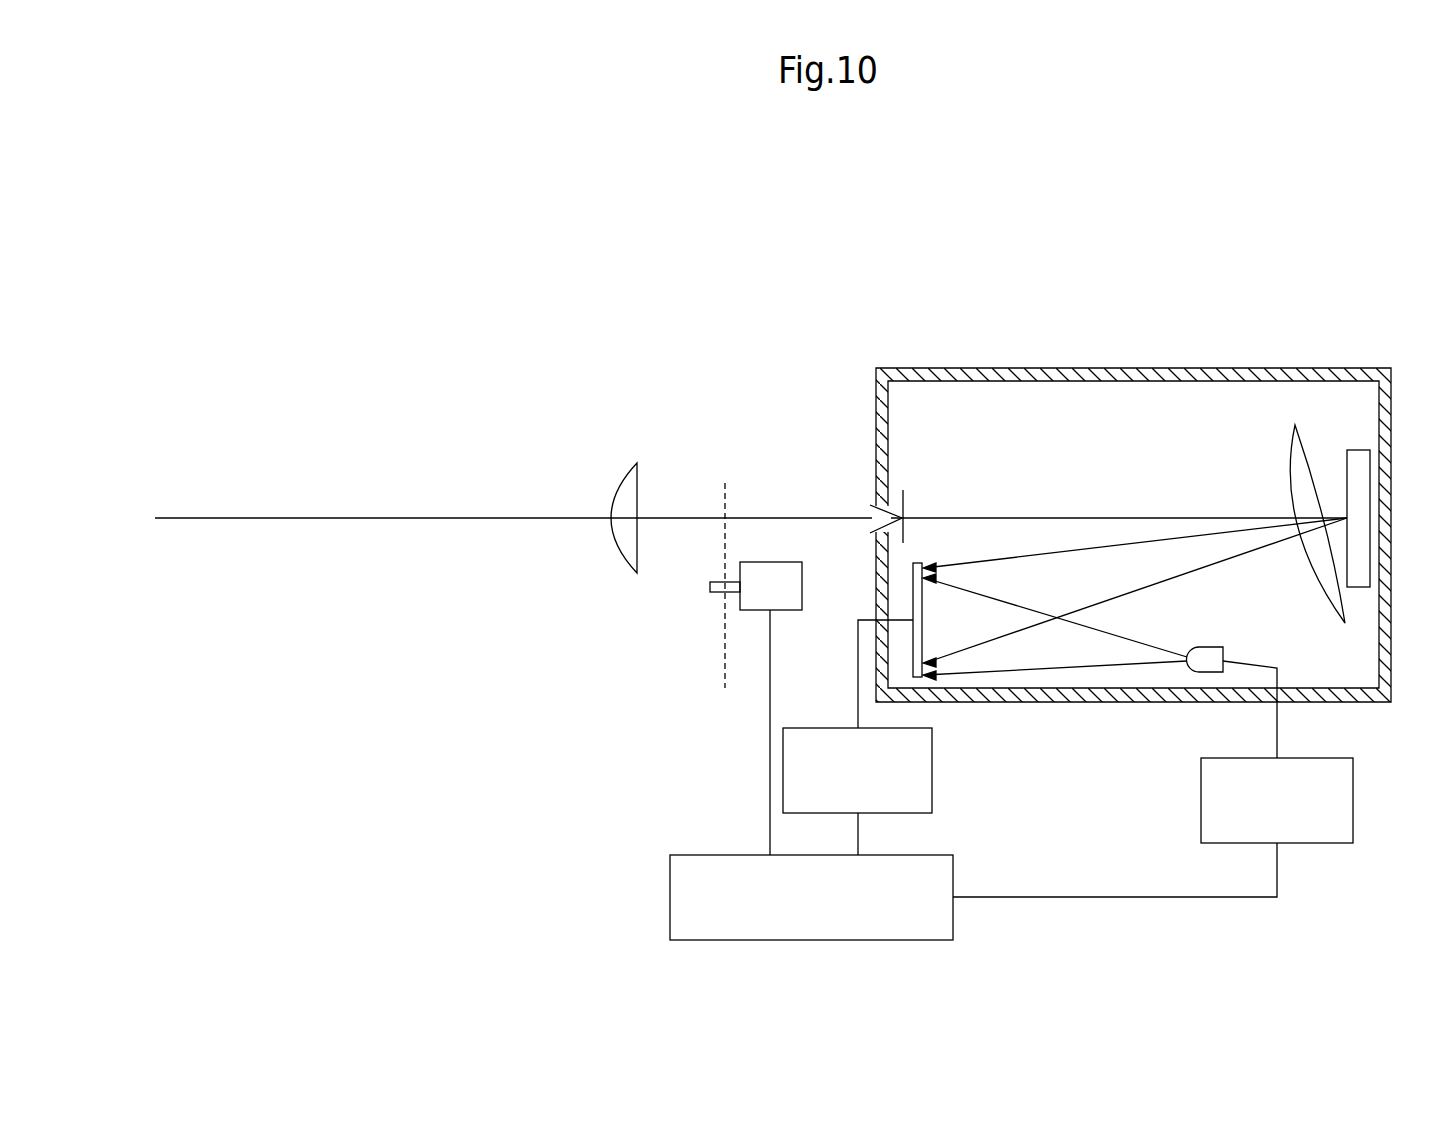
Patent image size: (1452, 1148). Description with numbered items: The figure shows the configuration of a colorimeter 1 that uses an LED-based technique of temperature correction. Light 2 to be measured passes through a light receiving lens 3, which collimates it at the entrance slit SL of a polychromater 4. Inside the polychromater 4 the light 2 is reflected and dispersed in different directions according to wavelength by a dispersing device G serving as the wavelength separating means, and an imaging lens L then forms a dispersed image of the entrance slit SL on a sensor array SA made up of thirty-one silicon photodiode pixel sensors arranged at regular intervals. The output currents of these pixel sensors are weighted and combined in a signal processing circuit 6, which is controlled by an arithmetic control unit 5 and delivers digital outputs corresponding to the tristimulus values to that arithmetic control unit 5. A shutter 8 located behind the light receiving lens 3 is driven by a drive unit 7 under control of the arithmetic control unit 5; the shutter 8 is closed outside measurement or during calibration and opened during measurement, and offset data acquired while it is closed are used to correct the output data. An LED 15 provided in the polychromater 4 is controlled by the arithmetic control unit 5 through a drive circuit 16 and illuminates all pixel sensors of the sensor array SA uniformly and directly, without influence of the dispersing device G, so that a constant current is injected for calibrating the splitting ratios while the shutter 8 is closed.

The colorimeter 1 is at (364, 434).
The light 2 is at (751, 502).
The light receiving lens 3 is at (630, 486).
The polychromater 4 is at (1110, 492).
The arithmetic control unit 5 is at (953, 877).
The signal processing circuit 6 is at (933, 742).
The drive unit 7 is at (797, 587).
The shutter 8 is at (722, 617).
The LED 15 is at (1210, 655).
The drive circuit 16 is at (1353, 792).
The entrance slit SL is at (866, 515).
The sensor array SA is at (915, 560).
The imaging lens L is at (1300, 458).
The dispersing device G is at (1360, 451).